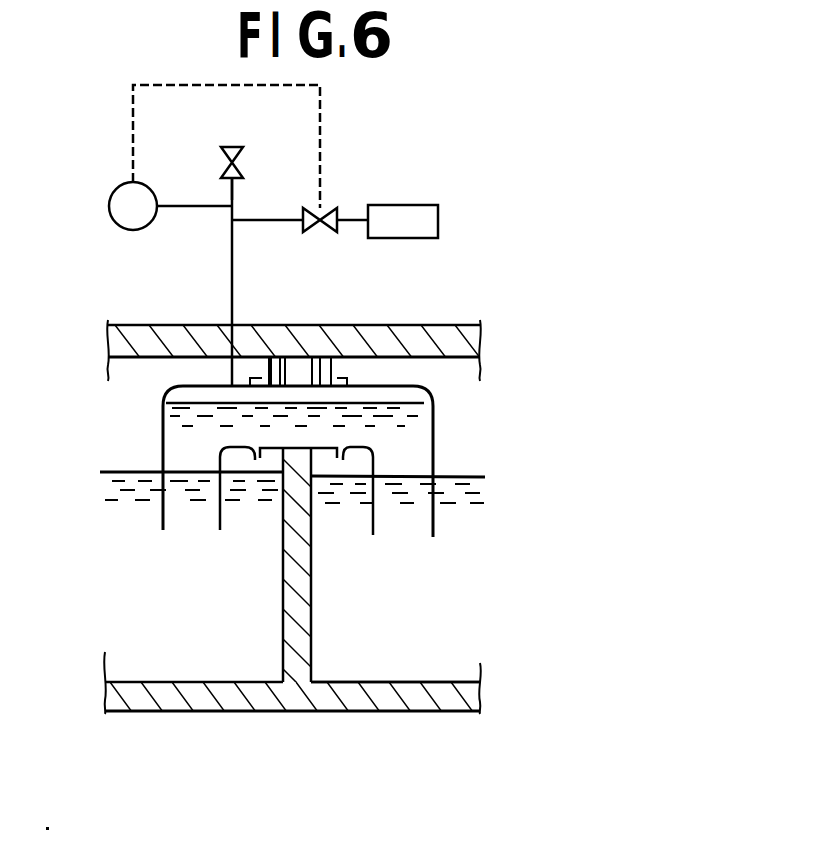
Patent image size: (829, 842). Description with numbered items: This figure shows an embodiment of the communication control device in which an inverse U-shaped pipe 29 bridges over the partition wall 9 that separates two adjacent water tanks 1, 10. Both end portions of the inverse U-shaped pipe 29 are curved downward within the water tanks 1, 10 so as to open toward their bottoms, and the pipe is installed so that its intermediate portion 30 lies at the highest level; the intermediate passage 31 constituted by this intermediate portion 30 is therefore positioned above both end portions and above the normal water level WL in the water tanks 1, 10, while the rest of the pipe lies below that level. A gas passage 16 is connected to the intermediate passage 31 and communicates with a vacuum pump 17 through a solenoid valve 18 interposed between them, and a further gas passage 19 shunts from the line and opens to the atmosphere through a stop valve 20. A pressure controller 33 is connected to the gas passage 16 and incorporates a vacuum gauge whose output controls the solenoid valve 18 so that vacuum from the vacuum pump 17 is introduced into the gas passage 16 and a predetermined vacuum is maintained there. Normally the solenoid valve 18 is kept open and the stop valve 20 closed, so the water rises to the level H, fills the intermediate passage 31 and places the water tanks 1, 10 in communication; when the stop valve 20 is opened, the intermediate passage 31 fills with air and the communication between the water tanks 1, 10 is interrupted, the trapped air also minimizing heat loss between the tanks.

The pressure controller 33 is at (113, 190).
The gas passage 16 is at (230, 270).
The stop valve 20 is at (242, 157).
The gas passage 19 is at (228, 187).
The solenoid valve 18 is at (330, 206).
The vacuum pump 17 is at (405, 204).
The intermediate passage 31 is at (263, 397).
The intermediate portion 30 is at (370, 386).
The inverse U-shaped pipe 29 is at (397, 406).
The water level H is at (433, 430).
The water level WL is at (113, 468).
The partition wall 9 is at (307, 615).
The water tank 1 is at (223, 667).
The water tank 10 is at (355, 665).